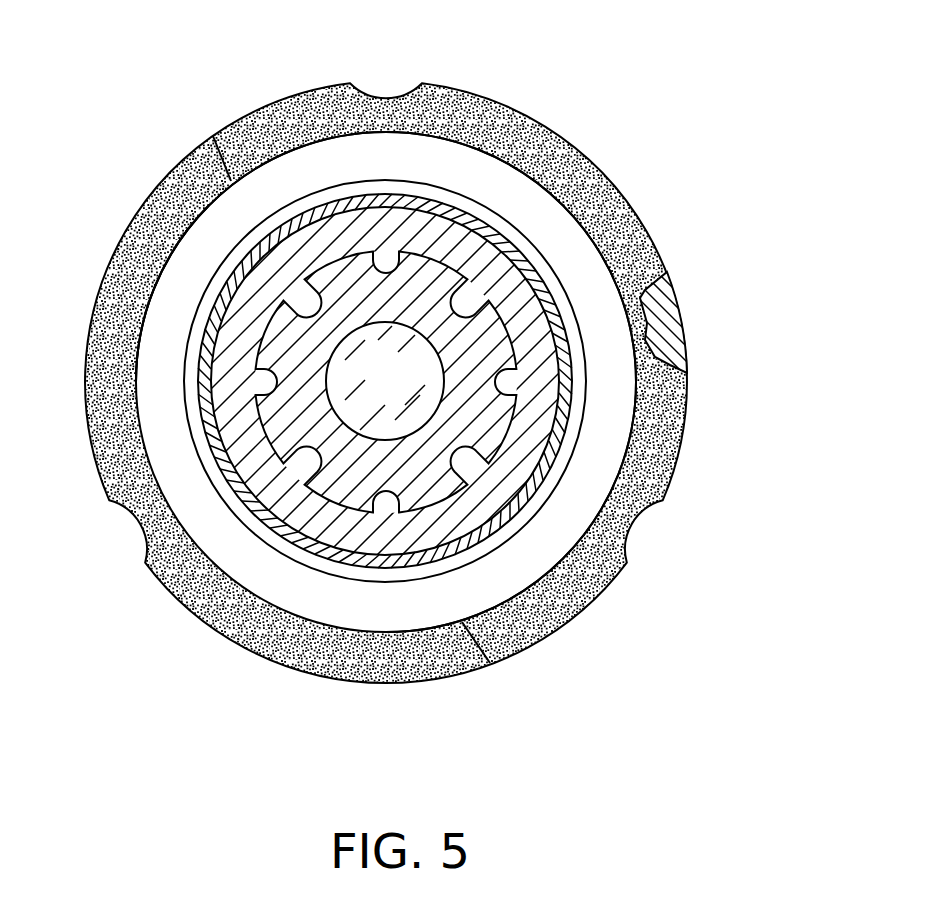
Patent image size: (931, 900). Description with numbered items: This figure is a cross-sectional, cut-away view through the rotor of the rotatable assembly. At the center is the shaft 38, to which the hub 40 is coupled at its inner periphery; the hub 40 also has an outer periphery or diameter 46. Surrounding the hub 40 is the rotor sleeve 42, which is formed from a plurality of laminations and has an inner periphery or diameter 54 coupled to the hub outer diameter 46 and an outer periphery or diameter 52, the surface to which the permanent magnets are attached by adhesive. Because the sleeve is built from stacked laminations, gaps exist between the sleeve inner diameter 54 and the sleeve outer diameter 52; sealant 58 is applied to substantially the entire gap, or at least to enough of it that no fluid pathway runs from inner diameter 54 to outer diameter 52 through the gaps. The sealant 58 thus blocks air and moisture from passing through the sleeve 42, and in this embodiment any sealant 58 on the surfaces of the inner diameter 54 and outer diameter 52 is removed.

The shaft 38 is at (370, 394).
The hub 40 is at (364, 586).
The rotor sleeve 42 is at (662, 321).
The outer periphery or diameter of hub 46 is at (464, 624).
The outer periphery or diameter of rotor sleeve 52 is at (590, 160).
The inner periphery or diameter of rotor sleeve 54 is at (217, 150).
The sealant 58 is at (470, 122).